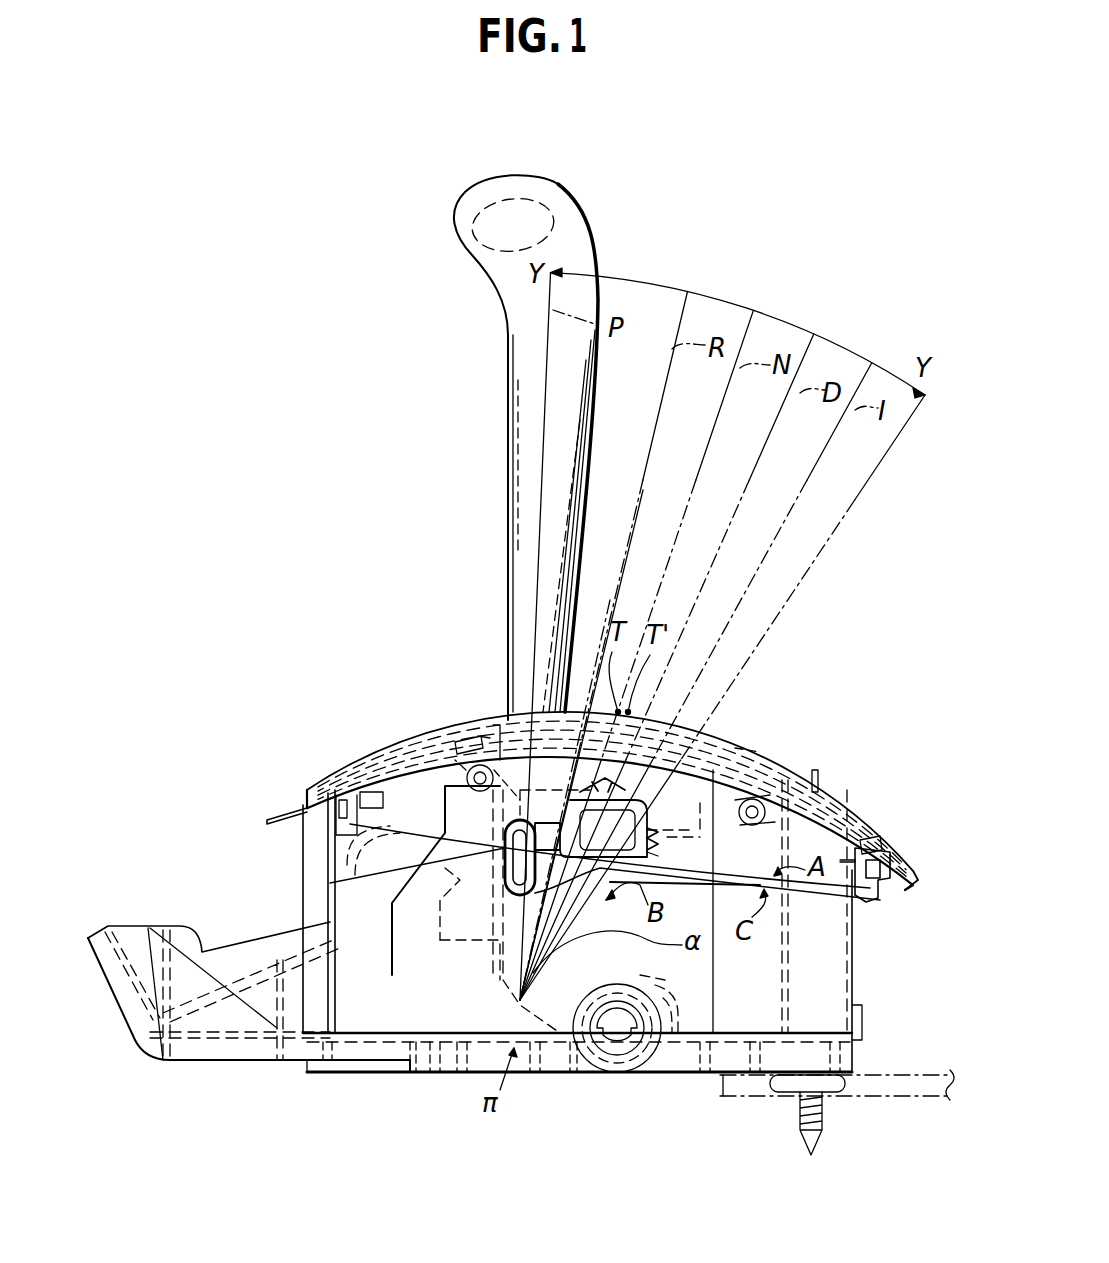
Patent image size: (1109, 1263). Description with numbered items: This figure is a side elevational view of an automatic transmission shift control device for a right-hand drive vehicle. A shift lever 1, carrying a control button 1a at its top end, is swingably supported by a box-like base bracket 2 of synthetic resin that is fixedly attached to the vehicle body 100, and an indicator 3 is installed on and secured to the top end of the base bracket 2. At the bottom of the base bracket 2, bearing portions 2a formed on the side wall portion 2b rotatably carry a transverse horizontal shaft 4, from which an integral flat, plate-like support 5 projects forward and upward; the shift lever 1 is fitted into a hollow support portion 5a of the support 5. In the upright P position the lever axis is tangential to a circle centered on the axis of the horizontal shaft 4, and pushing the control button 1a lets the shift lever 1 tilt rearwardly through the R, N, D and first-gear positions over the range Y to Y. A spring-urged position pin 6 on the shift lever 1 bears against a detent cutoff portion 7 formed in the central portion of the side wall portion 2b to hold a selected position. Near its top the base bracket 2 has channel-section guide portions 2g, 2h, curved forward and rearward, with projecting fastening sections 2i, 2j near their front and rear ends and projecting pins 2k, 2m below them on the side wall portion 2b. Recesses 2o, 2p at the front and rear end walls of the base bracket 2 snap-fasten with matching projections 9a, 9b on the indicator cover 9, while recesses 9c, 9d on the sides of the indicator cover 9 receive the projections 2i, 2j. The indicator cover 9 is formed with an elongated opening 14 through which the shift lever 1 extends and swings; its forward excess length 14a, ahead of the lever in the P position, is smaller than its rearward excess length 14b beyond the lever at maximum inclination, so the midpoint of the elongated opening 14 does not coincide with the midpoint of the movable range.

The shift lever 1 is at (508, 397).
The control button 1a is at (492, 243).
The base bracket 2 is at (855, 955).
The bearing portions 2a is at (655, 1020).
The side wall portion 2b is at (460, 1020).
The guide portion 2g is at (690, 748).
The guide portion 2h is at (652, 854).
The fastening section 2i is at (478, 760).
The fastening section 2j is at (820, 774).
The fastening section 2k is at (475, 768).
The fastening section 2m is at (870, 838).
The fastening section 2o is at (336, 815).
The fastening section 2p is at (886, 880).
The indicator 3 is at (390, 748).
The horizontal shaft 4 is at (612, 1045).
The support 5 is at (630, 1040).
The hollow support portion 5a is at (507, 948).
The position pin 6 is at (330, 885).
The detent cutoff portion 7 is at (655, 815).
The indicator cover 9 is at (318, 790).
The fastening section 9a is at (347, 855).
The fastening section 9b is at (858, 902).
The fastening section 9c is at (495, 725).
The fastening section 9d is at (768, 815).
The elongated opening 14 is at (577, 712).
The excess length 14a is at (478, 736).
The excess length 14b is at (745, 750).
The vehicle body 100 is at (915, 1085).